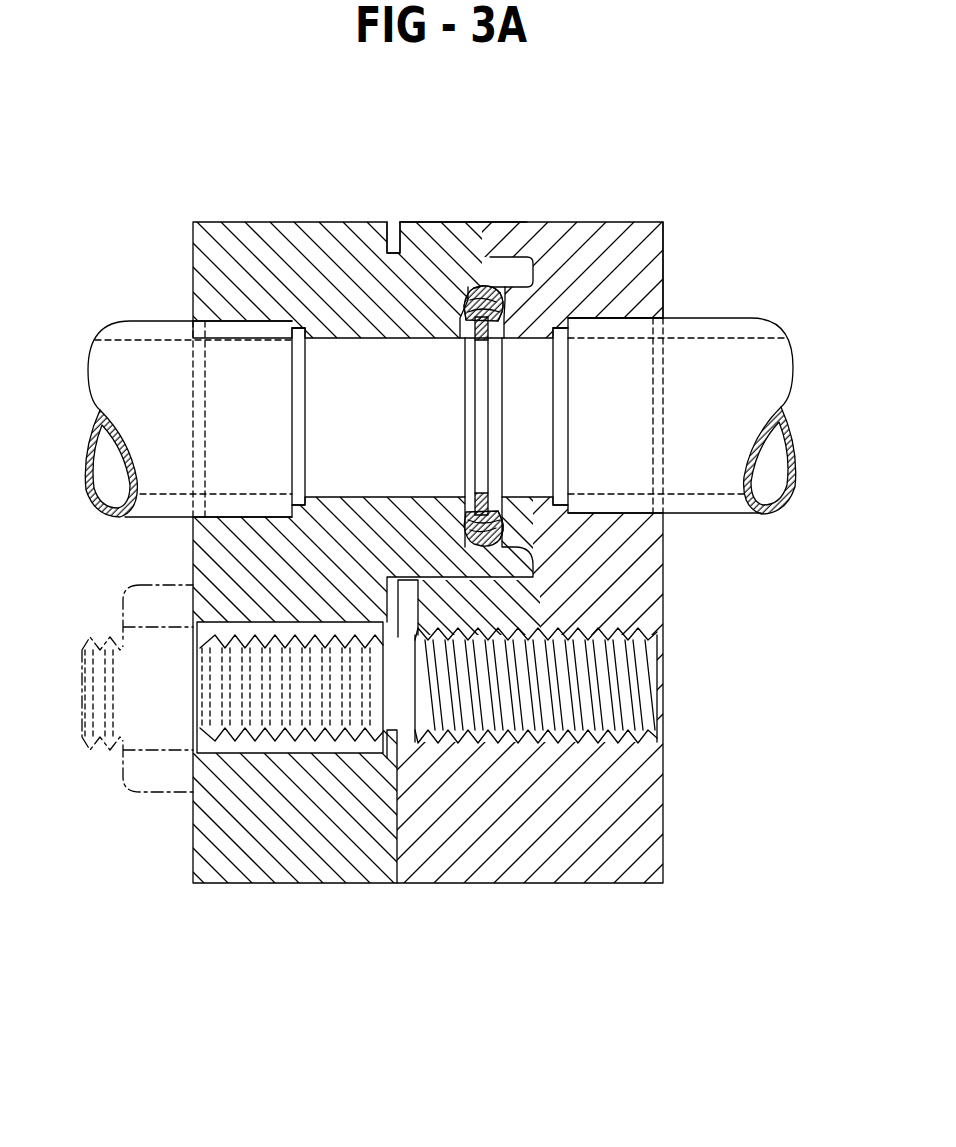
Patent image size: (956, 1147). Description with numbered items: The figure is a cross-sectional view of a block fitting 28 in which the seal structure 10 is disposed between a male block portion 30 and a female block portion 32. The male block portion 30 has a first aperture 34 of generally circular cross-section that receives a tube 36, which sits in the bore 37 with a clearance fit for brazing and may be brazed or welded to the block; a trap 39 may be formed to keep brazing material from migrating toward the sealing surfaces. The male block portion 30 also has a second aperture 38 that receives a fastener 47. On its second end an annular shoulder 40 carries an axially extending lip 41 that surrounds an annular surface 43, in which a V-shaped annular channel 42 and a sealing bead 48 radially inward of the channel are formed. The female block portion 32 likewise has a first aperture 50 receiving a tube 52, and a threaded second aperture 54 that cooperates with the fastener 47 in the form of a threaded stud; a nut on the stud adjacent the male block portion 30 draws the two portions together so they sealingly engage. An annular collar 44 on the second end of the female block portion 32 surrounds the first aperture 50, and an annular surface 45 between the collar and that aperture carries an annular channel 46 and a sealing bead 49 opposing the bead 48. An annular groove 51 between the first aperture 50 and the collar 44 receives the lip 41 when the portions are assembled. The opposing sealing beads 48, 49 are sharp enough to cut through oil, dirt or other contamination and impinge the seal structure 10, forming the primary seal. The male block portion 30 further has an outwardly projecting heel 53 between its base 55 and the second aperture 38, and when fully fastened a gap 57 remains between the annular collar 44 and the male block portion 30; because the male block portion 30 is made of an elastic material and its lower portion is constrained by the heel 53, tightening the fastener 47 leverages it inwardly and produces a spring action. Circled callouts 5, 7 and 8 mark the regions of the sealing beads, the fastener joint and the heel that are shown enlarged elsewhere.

The block fitting 28 is at (183, 184).
The male block portion 30 is at (190, 222).
The female block portion 32 is at (663, 224).
The first aperture 34 is at (290, 340).
The tube 36 is at (98, 317).
The bore 37 is at (235, 332).
The second aperture 38 is at (228, 706).
The trap 39 is at (298, 330).
The annular shoulder 40 is at (436, 292).
The axially extending lip 41 is at (522, 268).
The annular channel 42 is at (477, 294).
The annular surface 43 is at (474, 501).
The annular collar 44 is at (470, 235).
The annular surface 45 is at (494, 531).
The annular channel 46 is at (487, 299).
The fastener 47 is at (108, 640).
The sealing bead 48 is at (469, 311).
The sealing bead 49 is at (498, 316).
The first aperture 50 is at (585, 322).
The annular groove 51 is at (512, 289).
The tube 52 is at (782, 319).
The heel 53 is at (401, 843).
The second aperture 54 is at (627, 688).
The base 55 is at (275, 886).
The gap 57 is at (395, 214).
The seal structure 10 is at (472, 420).
The detail circle 5,6 5 is at (505, 300).
The detail 7 is at (543, 565).
The detail 8 is at (430, 772).